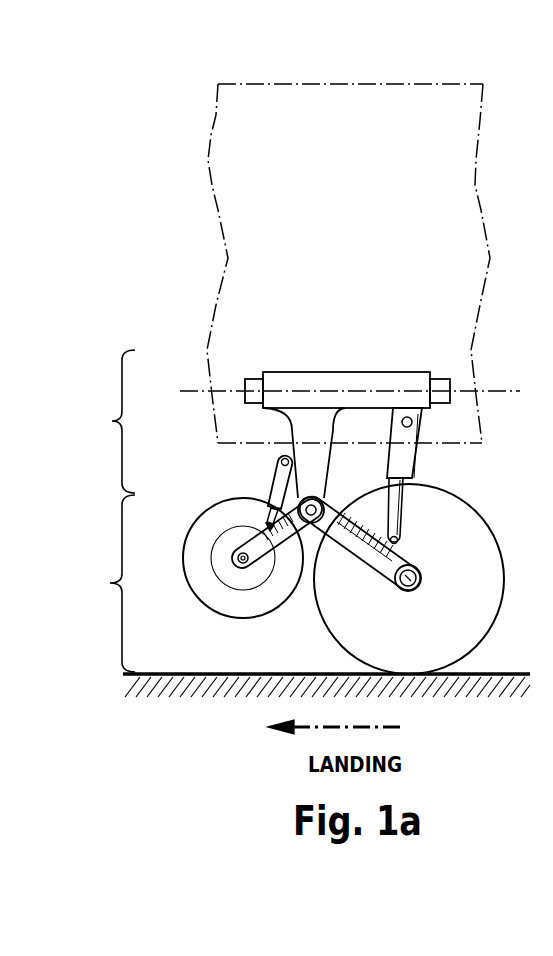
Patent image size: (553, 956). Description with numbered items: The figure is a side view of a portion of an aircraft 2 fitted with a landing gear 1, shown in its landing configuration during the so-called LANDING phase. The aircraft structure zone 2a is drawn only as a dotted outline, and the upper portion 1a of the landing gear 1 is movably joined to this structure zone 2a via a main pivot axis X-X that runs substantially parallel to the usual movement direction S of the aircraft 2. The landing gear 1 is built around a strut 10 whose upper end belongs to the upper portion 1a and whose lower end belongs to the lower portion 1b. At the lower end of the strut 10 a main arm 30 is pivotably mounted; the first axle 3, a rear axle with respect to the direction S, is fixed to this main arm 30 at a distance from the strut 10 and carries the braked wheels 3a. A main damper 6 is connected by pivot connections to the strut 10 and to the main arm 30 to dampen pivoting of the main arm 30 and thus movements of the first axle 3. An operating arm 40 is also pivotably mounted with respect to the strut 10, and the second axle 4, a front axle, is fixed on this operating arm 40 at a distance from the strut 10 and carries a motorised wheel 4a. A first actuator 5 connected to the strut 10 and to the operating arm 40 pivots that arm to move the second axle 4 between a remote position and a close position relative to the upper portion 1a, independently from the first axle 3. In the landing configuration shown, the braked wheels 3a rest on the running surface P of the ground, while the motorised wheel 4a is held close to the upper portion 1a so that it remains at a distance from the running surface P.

The landing gear 1 is at (305, 372).
The upper portion 1a is at (108, 421).
The lower portion 1b is at (109, 583).
The aircraft 2 is at (355, 103).
The aircraft structure zone 2a is at (453, 443).
The first axle 3 is at (421, 578).
The braked wheels 3a is at (498, 609).
The second axle 4 is at (236, 557).
The motorised wheel 4a is at (190, 587).
The first actuator 5 is at (278, 483).
The main damper 6 is at (410, 462).
The strut 10 is at (298, 432).
The main arm 30 is at (374, 568).
The operating arm 40 is at (268, 560).
The running surface P is at (173, 678).
The usual movement direction S is at (383, 724).
The main pivot axis X-X is at (187, 390).